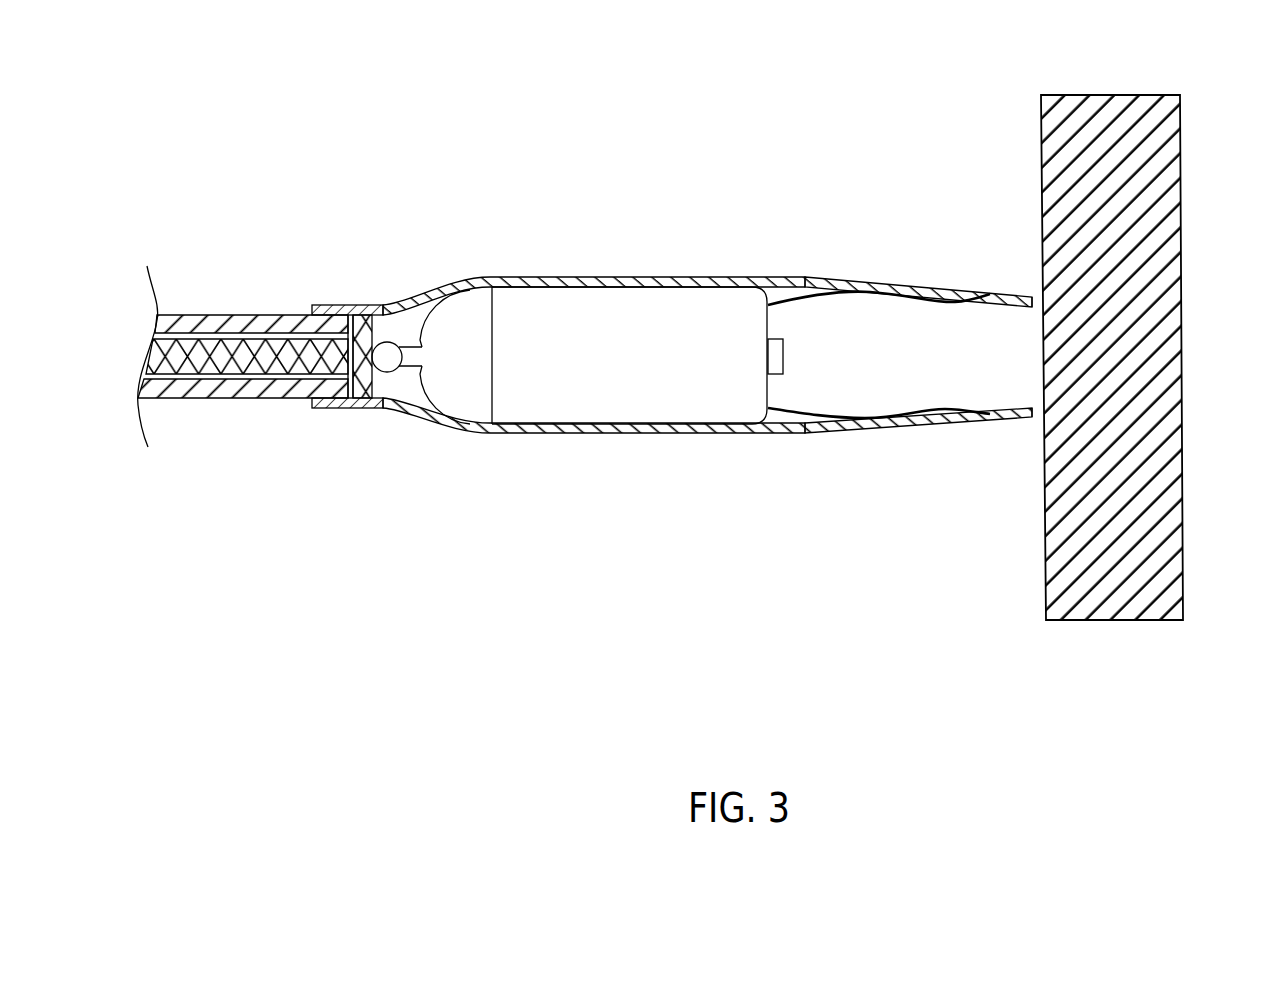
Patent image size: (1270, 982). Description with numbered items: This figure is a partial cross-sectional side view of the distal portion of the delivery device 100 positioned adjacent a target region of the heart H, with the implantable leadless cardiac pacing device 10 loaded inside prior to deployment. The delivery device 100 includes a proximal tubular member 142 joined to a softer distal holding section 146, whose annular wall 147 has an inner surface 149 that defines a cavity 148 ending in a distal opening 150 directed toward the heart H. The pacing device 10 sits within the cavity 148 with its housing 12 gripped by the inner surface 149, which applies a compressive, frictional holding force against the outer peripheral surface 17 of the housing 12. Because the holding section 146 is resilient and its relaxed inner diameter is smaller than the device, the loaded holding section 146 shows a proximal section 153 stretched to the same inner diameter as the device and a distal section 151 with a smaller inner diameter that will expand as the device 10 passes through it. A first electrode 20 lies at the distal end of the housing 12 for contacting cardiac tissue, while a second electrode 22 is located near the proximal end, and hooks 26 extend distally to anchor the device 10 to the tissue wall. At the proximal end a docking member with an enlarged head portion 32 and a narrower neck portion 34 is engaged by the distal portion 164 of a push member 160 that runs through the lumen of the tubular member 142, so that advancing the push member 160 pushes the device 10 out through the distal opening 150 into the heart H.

The delivery device 100 is at (400, 200).
The tubular member 142 is at (192, 322).
The push member 160 is at (240, 368).
The distal portion 164 is at (362, 390).
The neck portion 34 is at (413, 347).
The head portion 32 is at (386, 362).
The second electrode 22 is at (471, 307).
The annular wall 147 is at (640, 283).
The cavity 148 is at (817, 322).
The proximal section 153 is at (527, 434).
The distal section 151 is at (974, 431).
The distal opening 150 is at (1018, 348).
The distal holding section 146 is at (731, 268).
The hooks 26 is at (937, 412).
The implantable leadless cardiac pacing device 10 is at (590, 416).
The housing 12 is at (687, 407).
The inner surface 149 is at (577, 288).
The outer peripheral surface 17 is at (592, 285).
The first electrode 20 is at (786, 358).
The heart H is at (1117, 110).